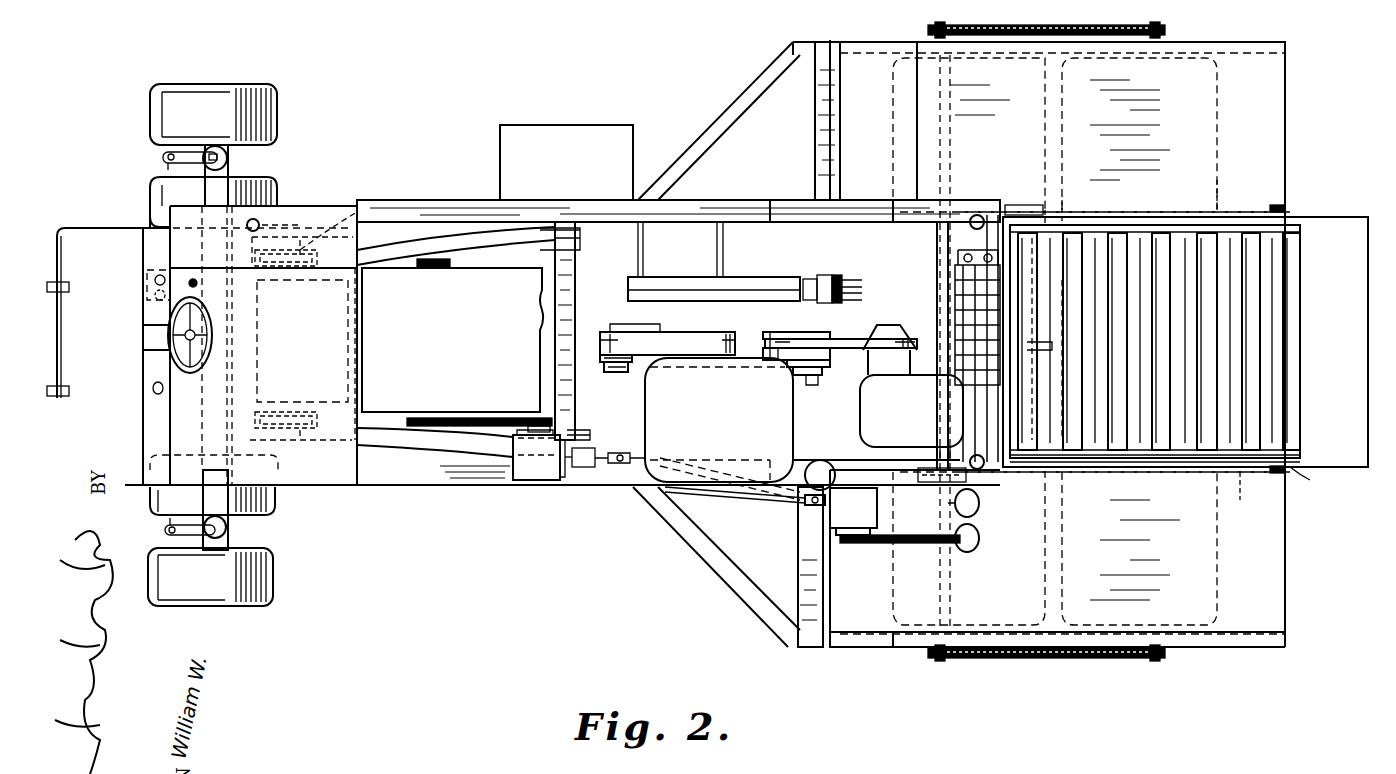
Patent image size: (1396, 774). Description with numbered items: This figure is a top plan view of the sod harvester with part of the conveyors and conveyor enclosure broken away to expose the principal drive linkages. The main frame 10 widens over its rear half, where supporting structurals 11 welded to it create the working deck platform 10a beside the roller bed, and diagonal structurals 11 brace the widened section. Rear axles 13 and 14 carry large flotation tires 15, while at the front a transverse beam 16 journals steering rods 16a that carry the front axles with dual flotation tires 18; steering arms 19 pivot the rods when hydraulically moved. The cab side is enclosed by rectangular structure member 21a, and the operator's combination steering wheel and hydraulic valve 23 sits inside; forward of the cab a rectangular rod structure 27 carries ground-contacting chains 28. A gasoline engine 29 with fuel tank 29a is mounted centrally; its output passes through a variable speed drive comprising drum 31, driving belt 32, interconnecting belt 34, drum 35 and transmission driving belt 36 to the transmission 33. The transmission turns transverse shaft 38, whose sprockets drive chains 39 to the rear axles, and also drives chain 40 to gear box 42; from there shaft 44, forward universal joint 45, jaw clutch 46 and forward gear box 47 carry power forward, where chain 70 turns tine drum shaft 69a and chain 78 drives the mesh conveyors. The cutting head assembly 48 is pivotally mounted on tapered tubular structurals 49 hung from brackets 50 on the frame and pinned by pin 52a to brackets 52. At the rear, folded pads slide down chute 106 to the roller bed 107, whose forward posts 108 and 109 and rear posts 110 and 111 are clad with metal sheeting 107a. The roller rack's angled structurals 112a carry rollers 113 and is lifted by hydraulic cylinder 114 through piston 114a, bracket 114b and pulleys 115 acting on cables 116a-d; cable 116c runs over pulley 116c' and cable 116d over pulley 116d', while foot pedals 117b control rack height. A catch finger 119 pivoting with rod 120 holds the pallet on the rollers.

The frame 10 is at (568, 292).
The working deck platform 10a is at (1282, 580).
The supporting structurals 11 is at (728, 112).
The rear axle 13 is at (1150, 28).
The rear axle 14 is at (972, 25).
The flotation tires 15 is at (893, 88).
The transverse beam 16 is at (198, 410).
The steering rod 16a is at (228, 158).
The dual flotation tires 18 is at (167, 123).
The steering arms 19 is at (163, 156).
The rectangular structure member 21a is at (290, 205).
The combination steering wheel and hydraulic valve 23 is at (180, 355).
The rod structure 27 is at (62, 228).
The chains 28 is at (70, 286).
The gasoline engine 29 is at (719, 420).
The fuel tank 29a is at (566, 162).
The drum 31 is at (606, 372).
The driving belt 32 is at (690, 338).
The transmission 33 is at (911, 417).
The interconnecting belt 34 is at (630, 372).
The drum 35 is at (810, 386).
The transmission driving belt 36 is at (810, 338).
The shaft 38 is at (940, 252).
The chains 39 is at (1068, 30).
The chain 40 is at (882, 545).
The gear box 42 is at (768, 540).
The shaft 44 is at (752, 495).
The forward universal joint 45 is at (620, 468).
The jaw clutch 46 is at (582, 470).
The forward gear box 47 is at (522, 482).
The cutting head assembly 48 is at (302, 341).
The structurals 49 is at (428, 245).
The brackets 50 is at (590, 245).
The bracket 52 is at (352, 212).
The pin 52a is at (305, 268).
The shaft 69a is at (425, 417).
The chain 70 is at (468, 417).
The chain 78 is at (450, 262).
The inclined chute area 106 is at (985, 372).
The roller bed 107 is at (1240, 355).
The metal sheeting 107a is at (1190, 212).
The forward post 108 is at (1002, 208).
The forward post 109 is at (988, 480).
The post 110 is at (1302, 228).
The post 111 is at (1300, 470).
The angled structurals 112a is at (1270, 228).
The rollers 113 is at (1215, 315).
The hydraulic cylinder 114 is at (675, 280).
The piston 114a is at (808, 280).
The bracket 114b is at (826, 275).
The pulleys 115 is at (844, 278).
The cables 116a-d is at (866, 278).
The cable 116c is at (1244, 187).
The pulley 116c' is at (1307, 186).
The cable 116d is at (1255, 497).
The pulley 116d' is at (1315, 486).
The foot pedals 117b is at (975, 510).
The catch finger 119 is at (1045, 345).
The rod 120 is at (1055, 222).